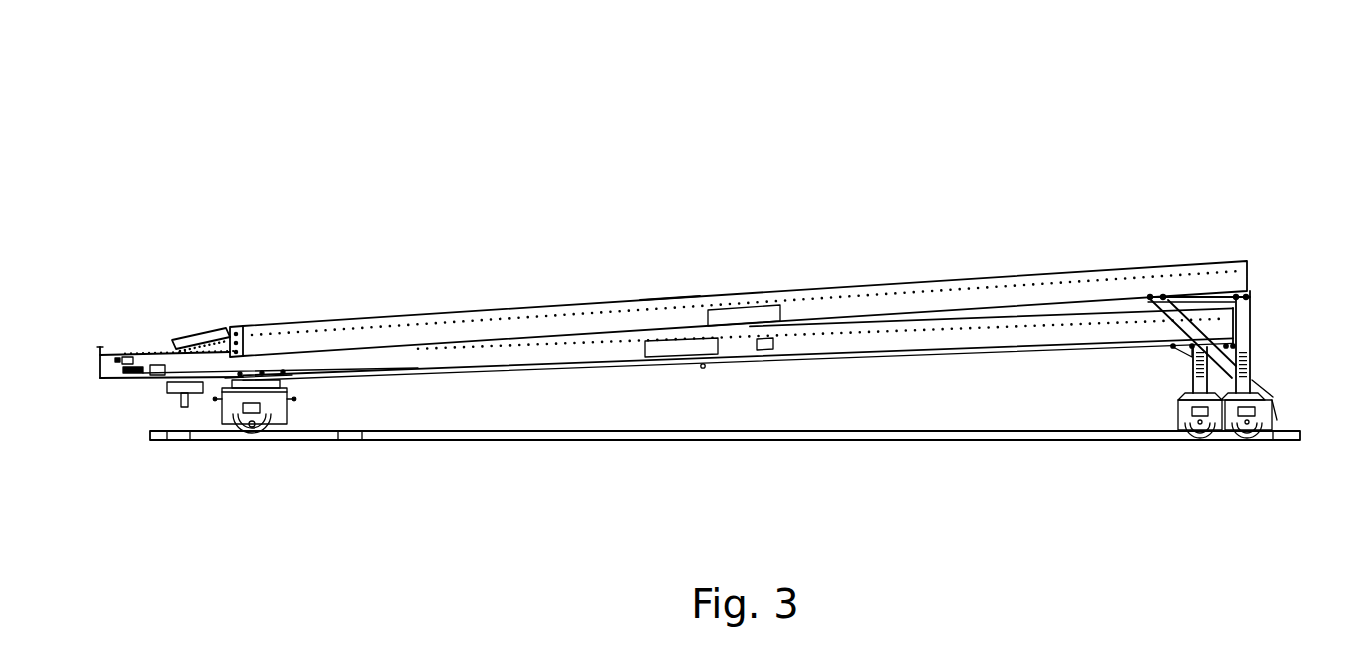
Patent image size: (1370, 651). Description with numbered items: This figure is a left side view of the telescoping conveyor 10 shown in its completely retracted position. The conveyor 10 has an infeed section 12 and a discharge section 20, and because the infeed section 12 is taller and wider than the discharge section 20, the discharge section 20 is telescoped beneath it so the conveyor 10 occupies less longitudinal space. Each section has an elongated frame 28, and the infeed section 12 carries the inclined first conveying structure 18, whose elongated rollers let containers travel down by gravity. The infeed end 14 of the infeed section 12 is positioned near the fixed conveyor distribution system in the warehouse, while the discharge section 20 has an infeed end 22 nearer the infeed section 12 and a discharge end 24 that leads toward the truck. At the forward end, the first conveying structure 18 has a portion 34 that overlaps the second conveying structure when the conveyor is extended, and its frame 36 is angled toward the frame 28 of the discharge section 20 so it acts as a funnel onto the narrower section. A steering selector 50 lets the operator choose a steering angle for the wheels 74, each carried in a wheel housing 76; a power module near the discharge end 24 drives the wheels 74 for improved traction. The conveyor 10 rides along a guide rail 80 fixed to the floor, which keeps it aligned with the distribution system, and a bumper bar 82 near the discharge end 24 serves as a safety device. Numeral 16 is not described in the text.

The telescoping conveyor 10 is at (763, 72).
The infeed section 12 is at (1067, 272).
The infeed end 14 is at (1248, 262).
The front end plate 16 is at (243, 328).
The first conveying structure 18 is at (670, 290).
The discharge section 20 is at (122, 356).
The infeed end 22 is at (1222, 317).
The discharge end 24 is at (100, 379).
The frame 28 is at (826, 346).
The portion 34 is at (187, 338).
The frame 36 is at (210, 333).
The steering selector 50 is at (180, 402).
The wheel 74 is at (251, 436).
The wheel housing 76 is at (219, 420).
The guide rail 80 is at (446, 441).
The bumper bar 82 is at (98, 362).